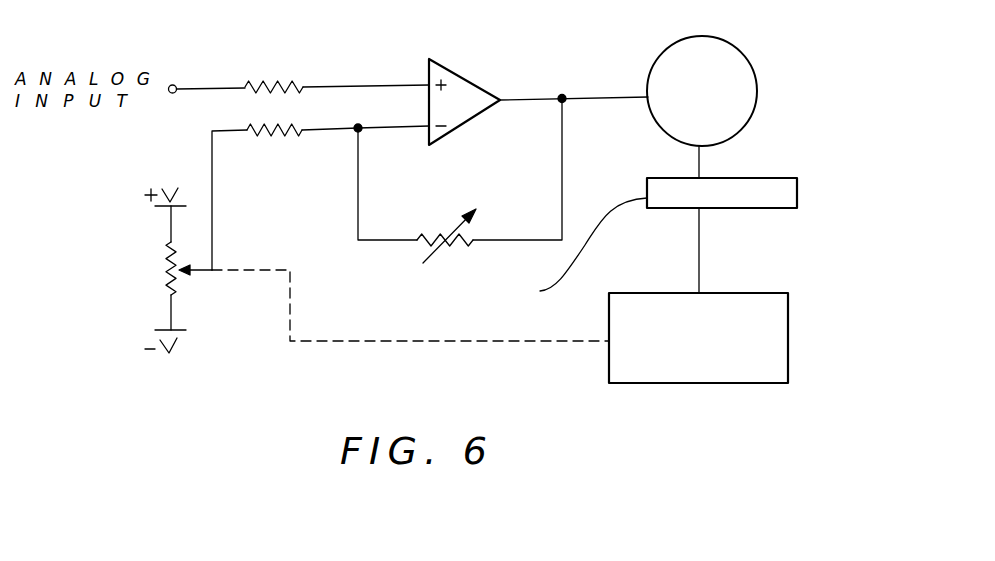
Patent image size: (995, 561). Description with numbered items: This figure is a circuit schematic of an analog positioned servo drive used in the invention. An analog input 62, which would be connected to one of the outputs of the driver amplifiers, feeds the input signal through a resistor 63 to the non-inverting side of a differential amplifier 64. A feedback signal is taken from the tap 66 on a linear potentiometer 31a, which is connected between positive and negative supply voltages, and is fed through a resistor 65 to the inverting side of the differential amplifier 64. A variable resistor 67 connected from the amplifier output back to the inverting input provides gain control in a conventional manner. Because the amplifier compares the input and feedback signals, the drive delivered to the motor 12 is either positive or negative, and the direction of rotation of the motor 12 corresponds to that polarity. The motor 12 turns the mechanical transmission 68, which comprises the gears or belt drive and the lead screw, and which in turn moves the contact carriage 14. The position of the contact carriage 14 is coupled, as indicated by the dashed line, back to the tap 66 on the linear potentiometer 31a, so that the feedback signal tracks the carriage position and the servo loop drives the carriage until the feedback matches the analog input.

The motor 12 is at (738, 44).
The carriage 14 is at (788, 312).
The linear potentiometer 31a is at (165, 266).
The input 62 is at (178, 86).
The resistor 63 is at (268, 82).
The differential amplifier 64 is at (472, 83).
The resistor 65 is at (262, 136).
The tap 66 is at (215, 273).
The variable resistor 67 is at (428, 233).
The mechanical transmission 68 is at (748, 209).